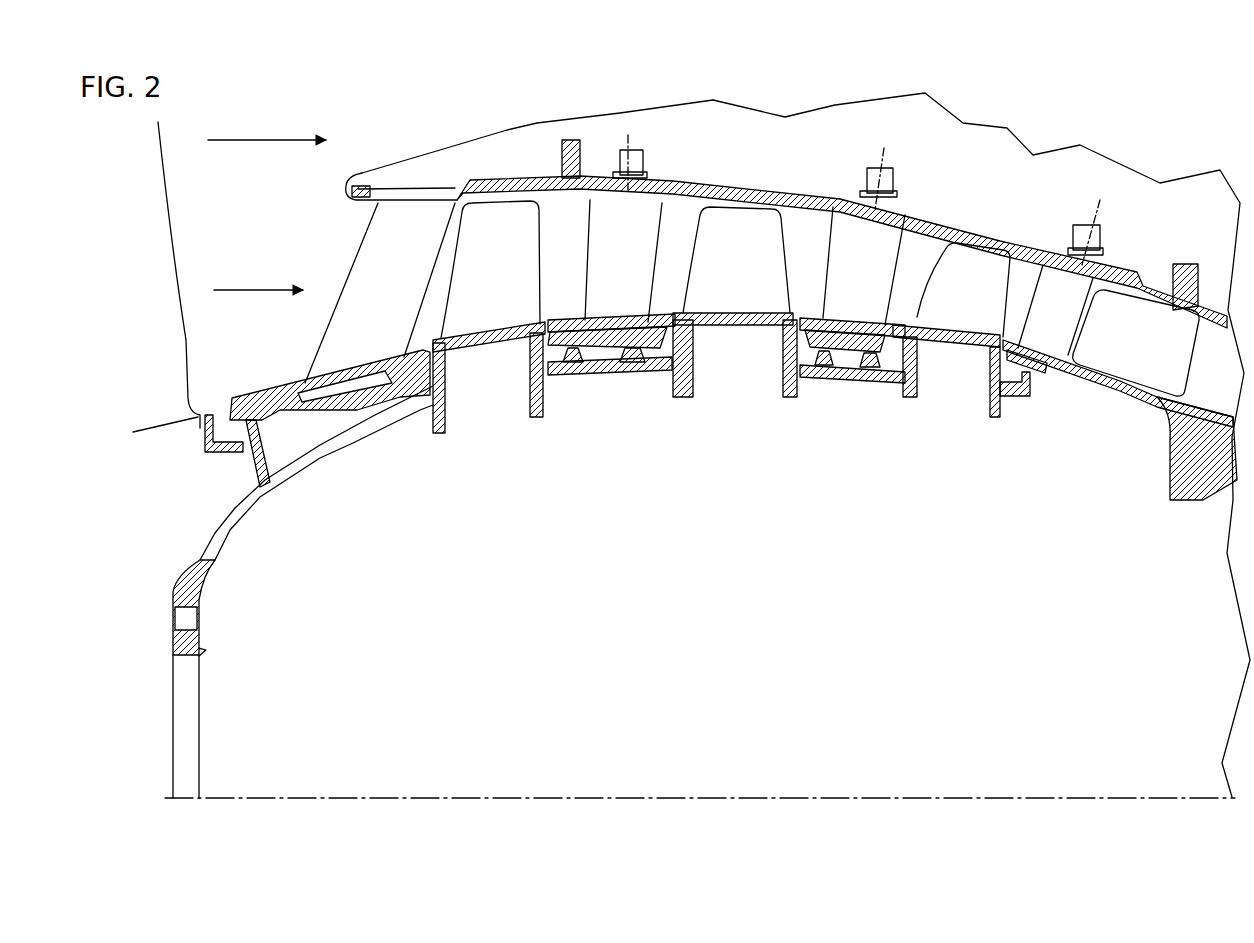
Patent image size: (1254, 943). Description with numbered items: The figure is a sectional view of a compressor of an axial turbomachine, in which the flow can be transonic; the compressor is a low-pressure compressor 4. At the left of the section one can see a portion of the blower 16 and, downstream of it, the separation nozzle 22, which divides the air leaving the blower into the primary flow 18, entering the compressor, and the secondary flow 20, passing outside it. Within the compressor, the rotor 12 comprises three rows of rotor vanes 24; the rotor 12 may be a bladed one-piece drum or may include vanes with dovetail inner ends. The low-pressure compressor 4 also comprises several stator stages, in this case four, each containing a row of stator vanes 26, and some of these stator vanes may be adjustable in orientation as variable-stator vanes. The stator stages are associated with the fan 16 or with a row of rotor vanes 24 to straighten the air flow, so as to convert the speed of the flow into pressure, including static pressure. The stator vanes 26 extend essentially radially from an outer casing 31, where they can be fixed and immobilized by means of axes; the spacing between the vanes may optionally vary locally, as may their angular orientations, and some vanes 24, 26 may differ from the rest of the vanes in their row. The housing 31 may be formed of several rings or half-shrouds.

The low-pressure compressor 4 is at (1166, 120).
The rotor 12 is at (200, 598).
The blower 16 is at (163, 287).
The primary flow 18 is at (258, 273).
The secondary flow 20 is at (267, 123).
The separation nozzle 22 is at (345, 192).
The rotor vanes 24 is at (505, 286).
The stator vanes 26 is at (396, 296).
The outer casing 31 is at (806, 186).